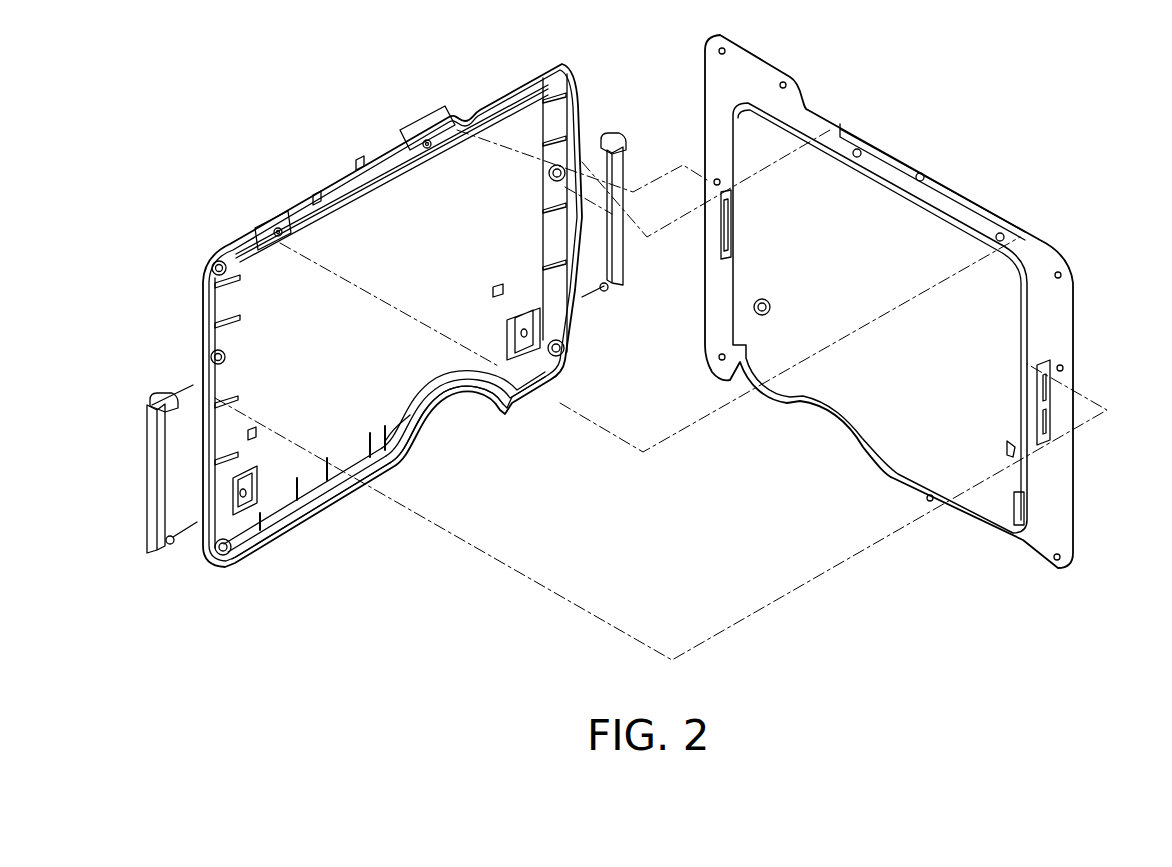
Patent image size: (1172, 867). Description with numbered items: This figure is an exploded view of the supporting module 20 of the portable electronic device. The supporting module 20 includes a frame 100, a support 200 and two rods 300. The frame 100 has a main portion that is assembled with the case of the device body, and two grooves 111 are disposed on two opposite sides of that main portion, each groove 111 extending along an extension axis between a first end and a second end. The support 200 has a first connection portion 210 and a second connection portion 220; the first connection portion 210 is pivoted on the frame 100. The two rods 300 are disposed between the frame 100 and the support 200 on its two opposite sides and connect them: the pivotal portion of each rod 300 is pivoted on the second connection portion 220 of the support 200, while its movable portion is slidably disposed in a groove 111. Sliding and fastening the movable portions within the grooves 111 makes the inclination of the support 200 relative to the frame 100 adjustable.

The supporting module 20 is at (131, 101).
The frame 100 is at (1075, 248).
The groove 111 is at (727, 237).
The support 200 is at (206, 244).
The first connection portion 210 is at (377, 147).
The second connection portion 220 is at (242, 503).
The rod 300 is at (140, 445).